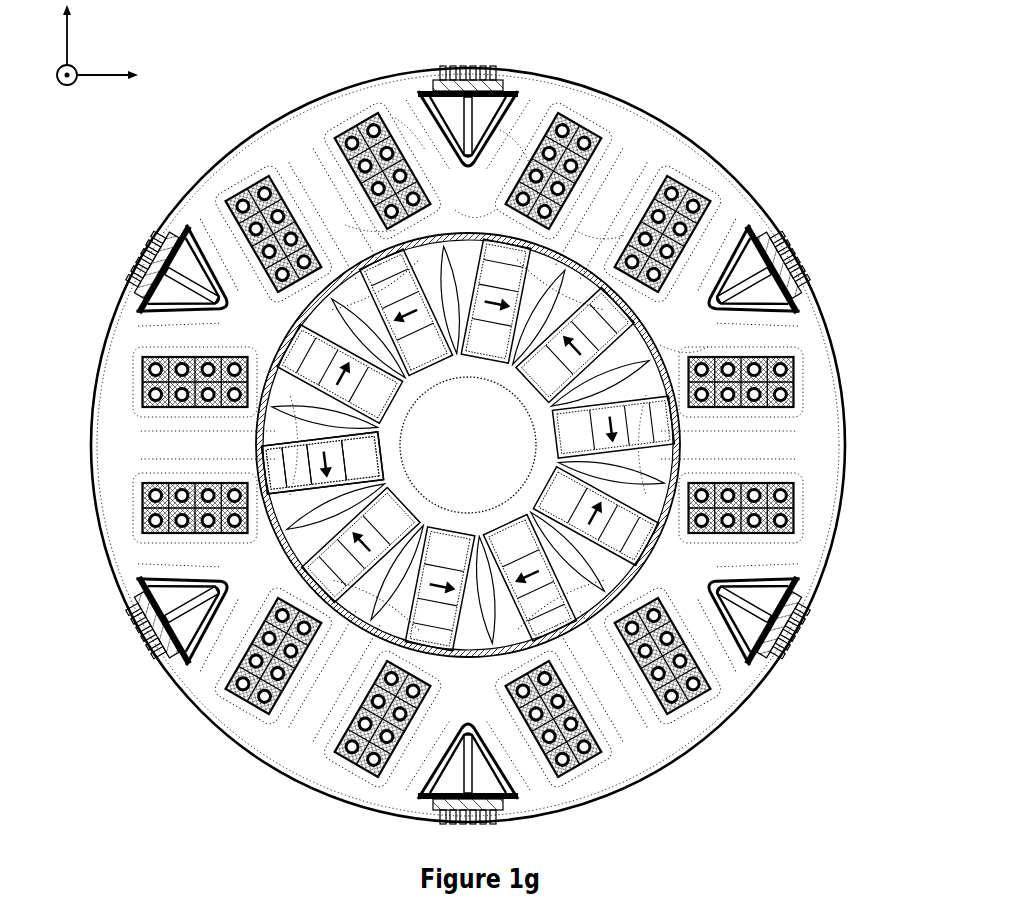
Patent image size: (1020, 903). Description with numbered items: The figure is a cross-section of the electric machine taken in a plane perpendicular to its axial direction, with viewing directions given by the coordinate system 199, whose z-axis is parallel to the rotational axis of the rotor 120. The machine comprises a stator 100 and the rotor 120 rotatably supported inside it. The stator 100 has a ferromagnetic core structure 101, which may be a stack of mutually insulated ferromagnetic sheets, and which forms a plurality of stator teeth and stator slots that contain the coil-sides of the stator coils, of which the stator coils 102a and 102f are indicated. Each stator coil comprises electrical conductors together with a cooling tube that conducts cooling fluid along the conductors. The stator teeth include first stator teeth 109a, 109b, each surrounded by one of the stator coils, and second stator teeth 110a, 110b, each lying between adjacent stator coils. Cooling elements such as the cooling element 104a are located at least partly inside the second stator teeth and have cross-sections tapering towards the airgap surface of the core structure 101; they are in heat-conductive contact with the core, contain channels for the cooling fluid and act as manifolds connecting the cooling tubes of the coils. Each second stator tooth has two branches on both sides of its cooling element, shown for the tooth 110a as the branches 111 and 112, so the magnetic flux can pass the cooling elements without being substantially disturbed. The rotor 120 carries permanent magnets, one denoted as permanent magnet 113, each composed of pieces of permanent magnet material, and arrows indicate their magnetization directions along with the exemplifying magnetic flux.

The stator 100 is at (790, 95).
The ferromagnetic core structure 101 is at (177, 203).
The stator coil 102a is at (677, 187).
The stator coil 102f is at (352, 133).
The cooling element 104a is at (505, 100).
The first stator tooth 109a is at (628, 220).
The first stator tooth 109b is at (363, 213).
The second stator tooth 110a is at (500, 203).
The second stator tooth 110b is at (708, 338).
The branch of stator tooth 111 is at (407, 130).
The branch of stator tooth 112 is at (515, 147).
The permanent magnet 113 is at (366, 473).
The rotor 120 is at (395, 625).
The coordinate system 199 is at (118, 50).